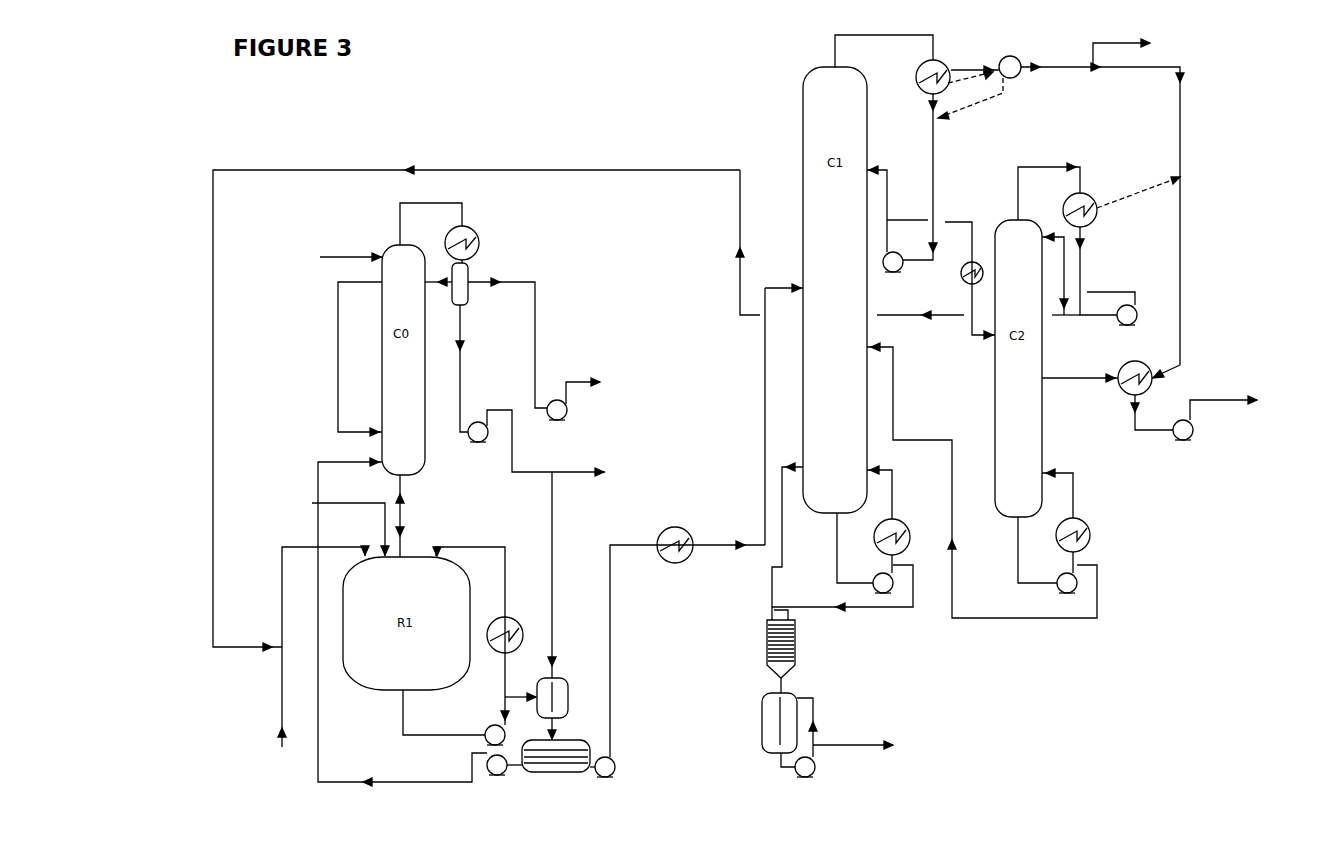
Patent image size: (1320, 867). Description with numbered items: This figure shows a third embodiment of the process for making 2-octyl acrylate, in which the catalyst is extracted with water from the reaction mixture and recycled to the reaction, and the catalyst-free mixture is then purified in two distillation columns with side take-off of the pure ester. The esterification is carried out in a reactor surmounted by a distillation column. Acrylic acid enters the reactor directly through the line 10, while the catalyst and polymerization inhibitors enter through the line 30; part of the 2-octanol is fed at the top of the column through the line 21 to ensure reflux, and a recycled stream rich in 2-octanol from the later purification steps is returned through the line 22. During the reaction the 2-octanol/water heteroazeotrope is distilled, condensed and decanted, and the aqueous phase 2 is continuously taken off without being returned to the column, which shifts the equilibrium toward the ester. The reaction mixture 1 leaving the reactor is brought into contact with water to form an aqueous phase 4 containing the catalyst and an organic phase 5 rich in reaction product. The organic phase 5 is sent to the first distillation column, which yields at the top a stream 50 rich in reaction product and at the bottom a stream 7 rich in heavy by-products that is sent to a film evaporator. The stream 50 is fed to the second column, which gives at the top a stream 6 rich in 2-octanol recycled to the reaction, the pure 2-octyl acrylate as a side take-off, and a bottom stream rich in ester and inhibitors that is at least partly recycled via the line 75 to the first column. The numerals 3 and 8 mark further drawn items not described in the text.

The reaction mixture 1 is at (520, 689).
The aqueous phase 2 is at (558, 544).
The filter 3 is at (773, 642).
The aqueous phase comprising the catalyst 4 is at (402, 622).
The organic phase 5 is at (681, 642).
The stream rich in 2-octanol 6 is at (769, 342).
The stream rich in heavy by-products 7 is at (842, 537).
The product side-draw stream from column C2 8 is at (1160, 400).
The line 10 is at (321, 658).
The line 21 is at (338, 258).
The line 22 is at (476, 422).
The line 30 is at (335, 526).
The stream rich in reaction product 50 is at (970, 271).
The line 75 is at (982, 480).